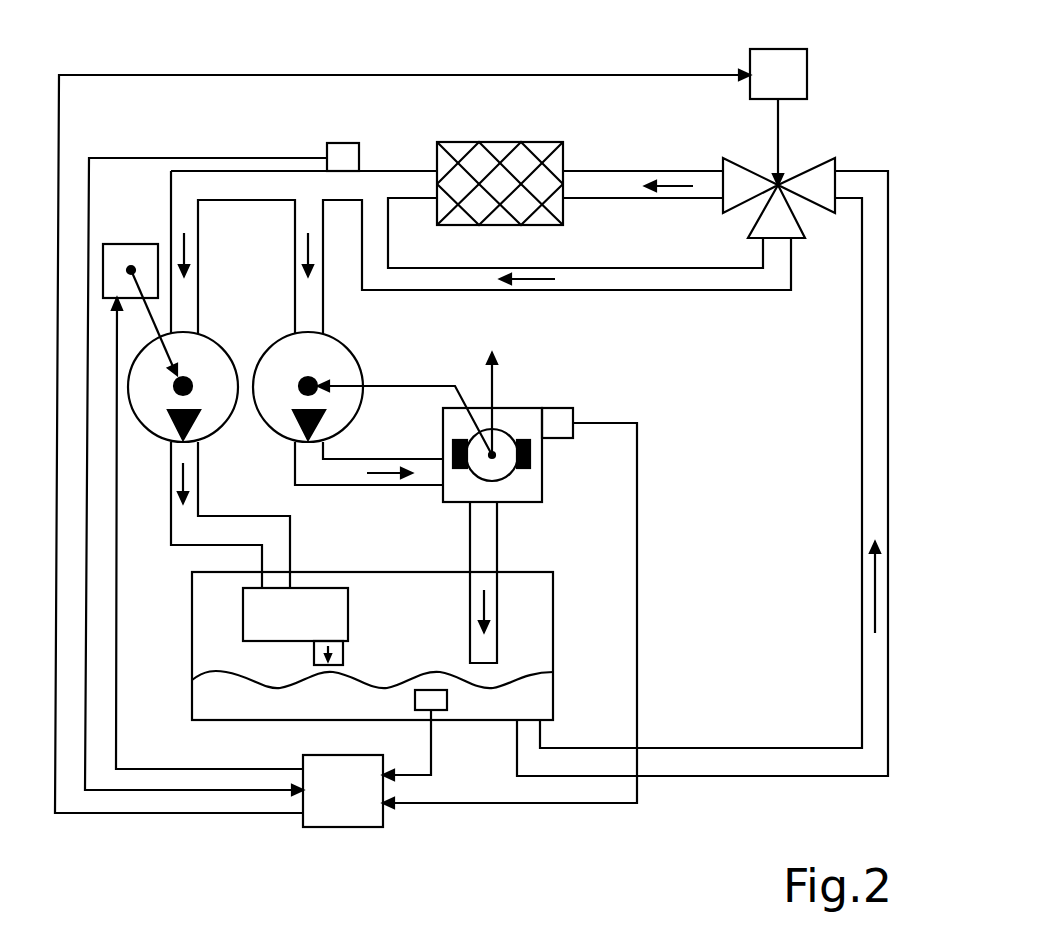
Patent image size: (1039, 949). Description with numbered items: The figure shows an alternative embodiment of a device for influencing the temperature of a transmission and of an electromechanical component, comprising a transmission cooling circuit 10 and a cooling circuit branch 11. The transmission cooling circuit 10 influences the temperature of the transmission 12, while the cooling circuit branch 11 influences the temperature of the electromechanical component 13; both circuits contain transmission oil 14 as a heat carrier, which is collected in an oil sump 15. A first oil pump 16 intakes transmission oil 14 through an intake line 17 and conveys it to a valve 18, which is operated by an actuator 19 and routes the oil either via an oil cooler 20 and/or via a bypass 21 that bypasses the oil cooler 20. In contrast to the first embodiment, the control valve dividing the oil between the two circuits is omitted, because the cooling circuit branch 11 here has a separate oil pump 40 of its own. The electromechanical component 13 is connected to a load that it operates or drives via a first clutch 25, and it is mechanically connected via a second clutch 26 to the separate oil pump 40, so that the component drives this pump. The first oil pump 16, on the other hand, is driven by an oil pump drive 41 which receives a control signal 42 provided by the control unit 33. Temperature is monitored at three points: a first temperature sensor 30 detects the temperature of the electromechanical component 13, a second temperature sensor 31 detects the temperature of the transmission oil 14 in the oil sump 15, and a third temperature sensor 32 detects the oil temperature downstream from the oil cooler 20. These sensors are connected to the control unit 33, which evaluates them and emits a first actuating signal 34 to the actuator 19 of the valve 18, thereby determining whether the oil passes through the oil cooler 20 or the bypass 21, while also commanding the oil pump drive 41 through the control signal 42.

The transmission cooling circuit 10 is at (297, 559).
The cooling circuit branch 11 is at (373, 457).
The transmission 12 is at (295, 626).
The electromechanical component 13 is at (517, 407).
The transmission oil 14 is at (513, 690).
The oil sump 15 is at (543, 570).
The first oil pump 16 is at (158, 437).
The intake line 17 is at (862, 168).
The valve 18 is at (810, 167).
The actuator 19 is at (785, 48).
The oil cooler 20 is at (566, 160).
The bypass 21 is at (563, 268).
The first clutch 25 is at (494, 378).
The second clutch 26 is at (410, 383).
The first temperature sensor 30 is at (563, 407).
The second temperature sensor 31 is at (423, 688).
The third temperature sensor 32 is at (359, 143).
The control unit 33 is at (343, 791).
The first actuating signal 34 is at (743, 73).
The separate oil pump 40 is at (280, 335).
The oil pump drive 41 is at (128, 243).
The control signal 42 is at (181, 766).